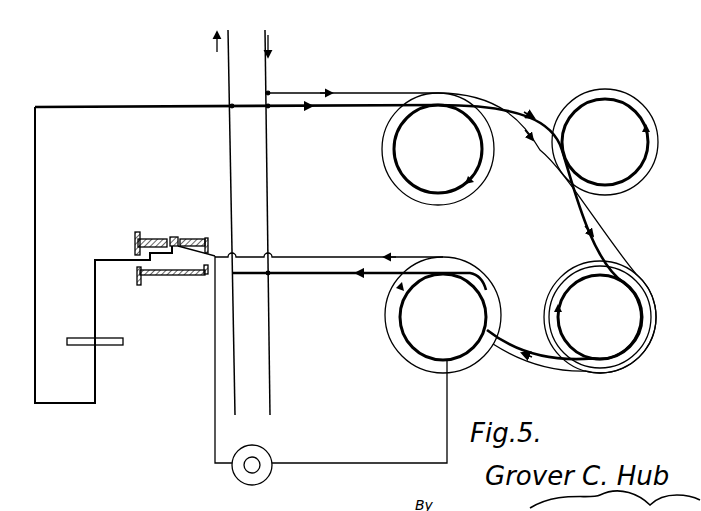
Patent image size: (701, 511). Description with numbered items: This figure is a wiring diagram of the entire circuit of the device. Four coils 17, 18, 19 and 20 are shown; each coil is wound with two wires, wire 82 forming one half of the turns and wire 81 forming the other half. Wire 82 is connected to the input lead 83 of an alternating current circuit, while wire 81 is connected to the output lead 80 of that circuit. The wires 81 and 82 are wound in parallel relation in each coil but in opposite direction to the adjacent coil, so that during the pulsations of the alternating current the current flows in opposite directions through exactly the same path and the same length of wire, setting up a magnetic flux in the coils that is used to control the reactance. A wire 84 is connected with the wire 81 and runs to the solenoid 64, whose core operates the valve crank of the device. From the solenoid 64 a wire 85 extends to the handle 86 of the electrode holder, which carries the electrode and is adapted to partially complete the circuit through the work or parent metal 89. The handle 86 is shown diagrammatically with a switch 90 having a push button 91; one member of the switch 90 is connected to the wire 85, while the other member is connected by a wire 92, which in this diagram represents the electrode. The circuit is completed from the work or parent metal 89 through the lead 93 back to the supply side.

The coil 17 is at (438, 149).
The coil 18 is at (605, 142).
The coil 19 is at (600, 317).
The coil 20 is at (443, 315).
The solenoid 64 is at (268, 452).
The output lead 80 is at (228, 83).
The wire 81 is at (367, 108).
The wire 82 is at (430, 93).
The input lead 83 is at (268, 194).
The wire 84 is at (364, 462).
The wire 85 is at (215, 383).
The handle 86 is at (163, 227).
The work or parent metal 89 is at (125, 342).
The switch 90 is at (173, 248).
The push button 91 is at (178, 237).
The wire 92 is at (95, 316).
The lead 93 is at (37, 210).